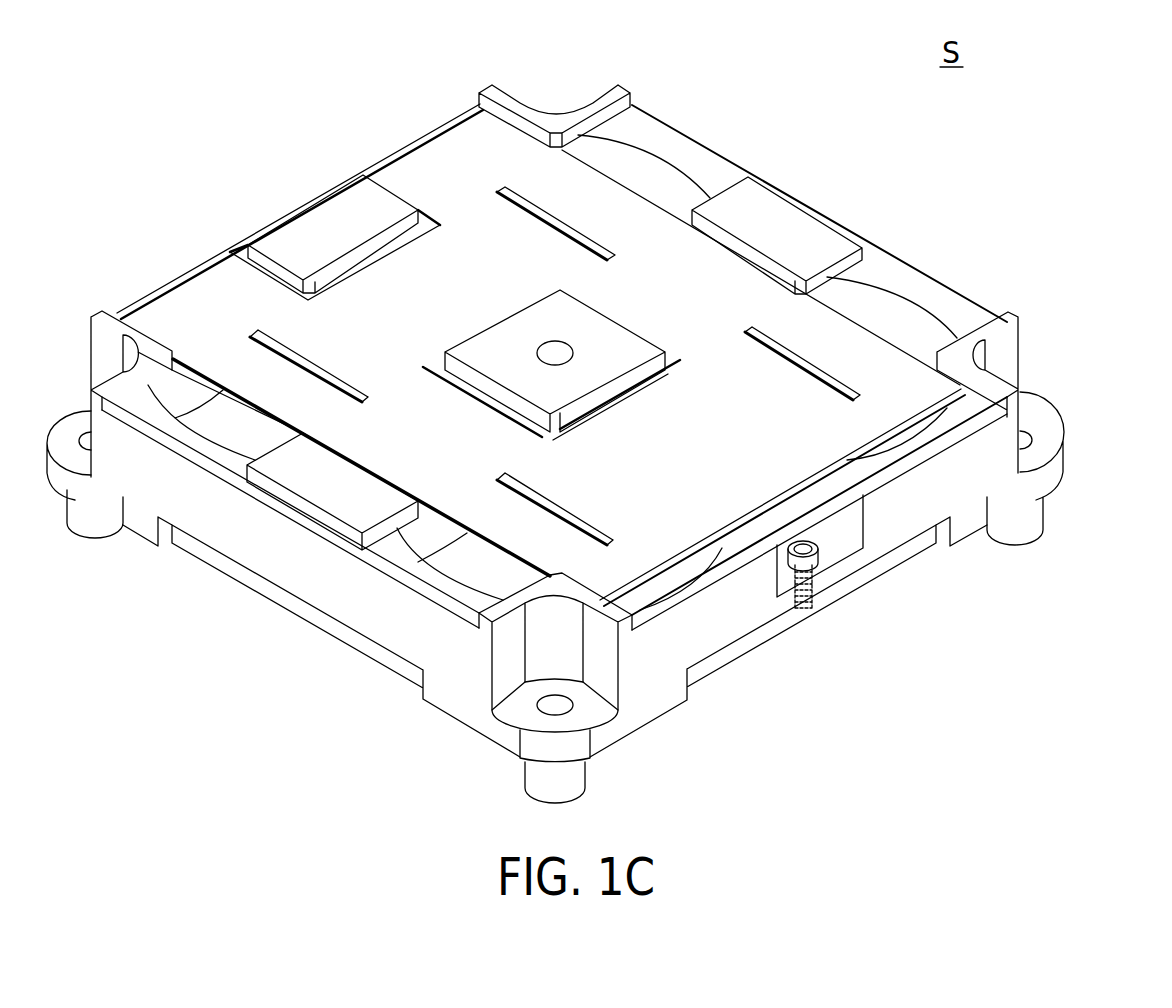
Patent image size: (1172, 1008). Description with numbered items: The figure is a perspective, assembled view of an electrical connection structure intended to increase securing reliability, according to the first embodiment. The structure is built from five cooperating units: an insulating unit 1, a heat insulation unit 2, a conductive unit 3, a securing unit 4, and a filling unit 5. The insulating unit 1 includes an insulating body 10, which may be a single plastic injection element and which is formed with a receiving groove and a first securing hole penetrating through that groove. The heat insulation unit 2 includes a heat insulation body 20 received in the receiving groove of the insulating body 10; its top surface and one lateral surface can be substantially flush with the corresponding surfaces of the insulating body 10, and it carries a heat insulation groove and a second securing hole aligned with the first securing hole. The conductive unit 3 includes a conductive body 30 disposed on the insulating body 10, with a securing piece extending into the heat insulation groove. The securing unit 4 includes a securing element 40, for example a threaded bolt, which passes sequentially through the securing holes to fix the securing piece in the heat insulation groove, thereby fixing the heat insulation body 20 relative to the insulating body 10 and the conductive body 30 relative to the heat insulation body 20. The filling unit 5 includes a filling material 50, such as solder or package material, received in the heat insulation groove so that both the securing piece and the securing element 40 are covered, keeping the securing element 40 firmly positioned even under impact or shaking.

The insulating unit 1 is at (593, 444).
The insulating body 10 is at (1003, 504).
The heat insulation unit 2 is at (596, 355).
The heat insulation body 20 is at (845, 537).
The conductive unit 3 is at (546, 329).
The conductive body 30 is at (795, 143).
The securing unit 4 is at (866, 587).
The securing element 40 is at (822, 572).
The filling unit 5 is at (455, 311).
The filling material 50 is at (792, 420).